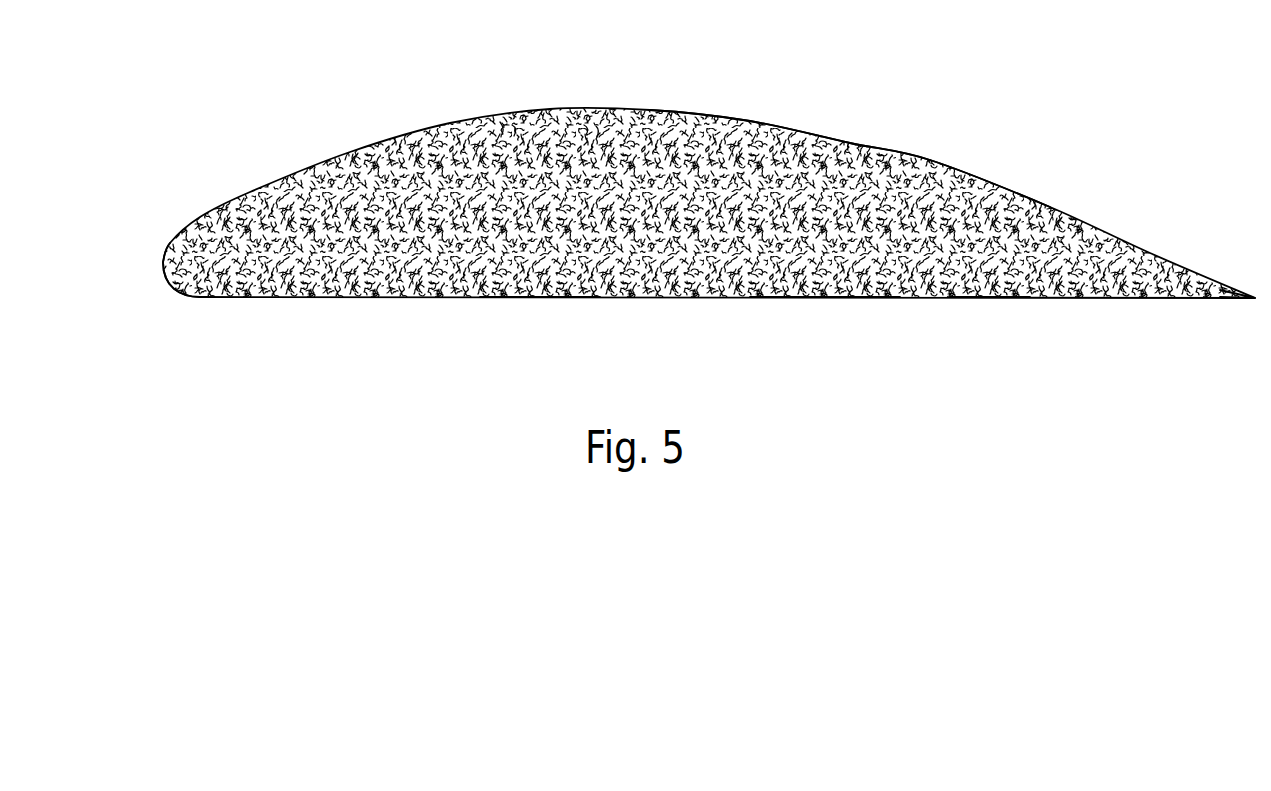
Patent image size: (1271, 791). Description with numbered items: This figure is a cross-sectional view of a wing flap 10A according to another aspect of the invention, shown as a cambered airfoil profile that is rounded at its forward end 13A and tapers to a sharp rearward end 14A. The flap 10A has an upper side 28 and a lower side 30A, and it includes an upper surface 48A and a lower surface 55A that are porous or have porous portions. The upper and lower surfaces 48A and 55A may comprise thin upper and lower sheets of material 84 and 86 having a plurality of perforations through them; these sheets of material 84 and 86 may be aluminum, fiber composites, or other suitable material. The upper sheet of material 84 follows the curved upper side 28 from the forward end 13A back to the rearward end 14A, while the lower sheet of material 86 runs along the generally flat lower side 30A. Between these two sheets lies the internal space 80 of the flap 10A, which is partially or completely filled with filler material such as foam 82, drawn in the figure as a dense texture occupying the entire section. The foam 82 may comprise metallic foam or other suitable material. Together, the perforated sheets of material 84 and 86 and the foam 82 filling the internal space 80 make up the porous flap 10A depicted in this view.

The flap 10A is at (937, 150).
The leading edge 13A is at (170, 243).
The trailing edge 14A is at (1256, 303).
The upper side 28 is at (828, 128).
The lower surface 30A is at (810, 301).
The upper surface 48A is at (722, 121).
The lower surface 55A is at (535, 298).
The internal space 80 is at (590, 130).
The foam 82 is at (508, 128).
The upper sheet of material 84 is at (1012, 192).
The lower sheet of material 86 is at (987, 298).